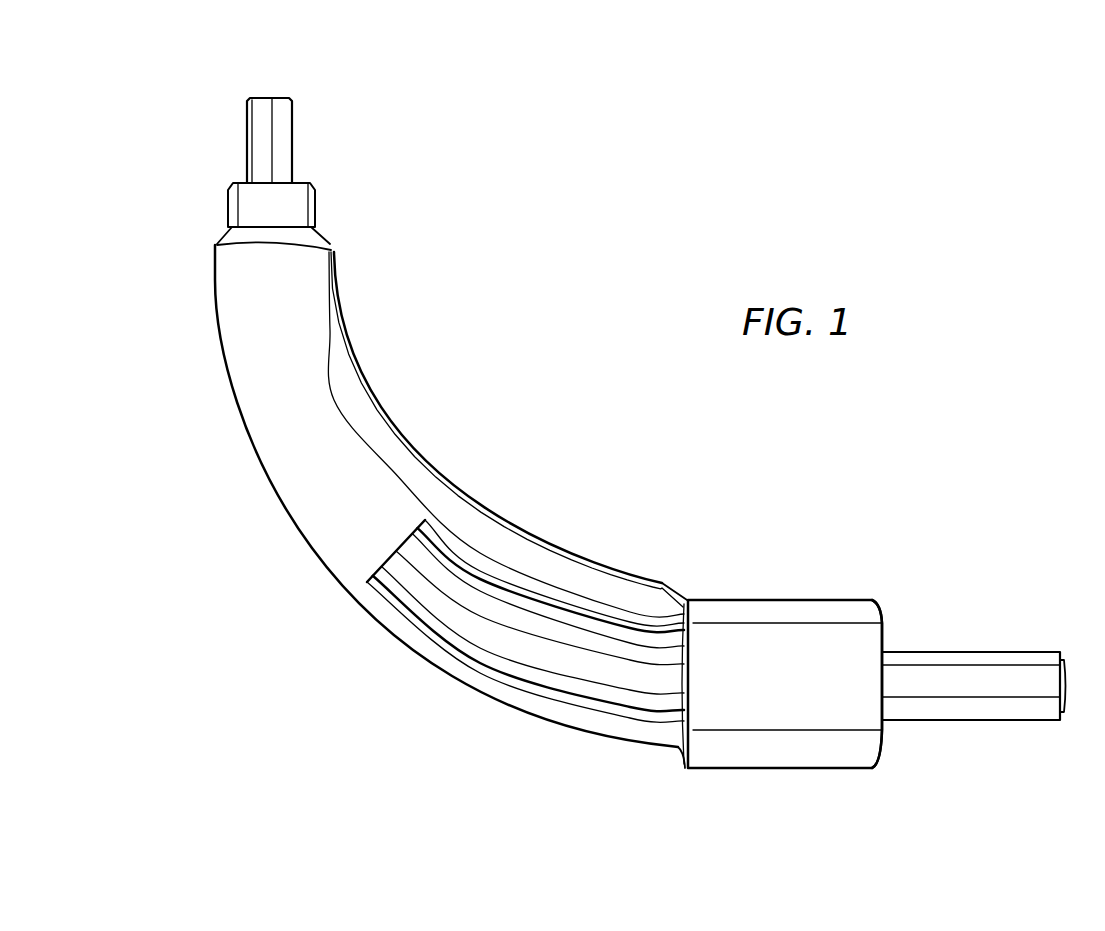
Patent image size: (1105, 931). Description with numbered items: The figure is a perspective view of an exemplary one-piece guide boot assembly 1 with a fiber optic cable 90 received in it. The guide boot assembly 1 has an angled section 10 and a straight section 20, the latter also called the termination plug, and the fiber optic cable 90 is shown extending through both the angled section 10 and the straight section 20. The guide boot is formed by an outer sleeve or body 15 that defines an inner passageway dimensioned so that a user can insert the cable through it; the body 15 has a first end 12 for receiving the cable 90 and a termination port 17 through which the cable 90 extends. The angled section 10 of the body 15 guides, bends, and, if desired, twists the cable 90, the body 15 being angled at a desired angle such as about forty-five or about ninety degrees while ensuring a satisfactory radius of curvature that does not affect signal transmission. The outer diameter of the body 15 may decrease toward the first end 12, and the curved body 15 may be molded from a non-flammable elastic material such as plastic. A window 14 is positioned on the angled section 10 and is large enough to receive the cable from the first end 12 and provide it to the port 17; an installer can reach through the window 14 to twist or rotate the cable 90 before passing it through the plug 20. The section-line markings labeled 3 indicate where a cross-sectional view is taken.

The guide boot assembly 1 is at (552, 313).
The angled section 10 is at (304, 576).
The first end 12 is at (300, 182).
The window 14 is at (472, 655).
The body 15 is at (268, 420).
The termination port 17 is at (883, 637).
The straight section 20 is at (806, 588).
The fiber optic cable 90 is at (285, 130).
The section line 3- 3 is at (228, 197).